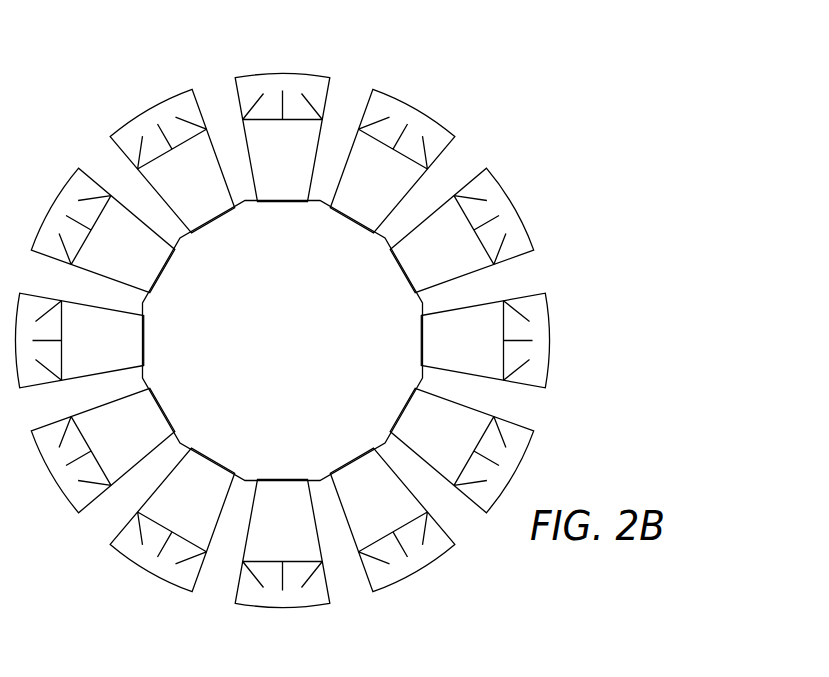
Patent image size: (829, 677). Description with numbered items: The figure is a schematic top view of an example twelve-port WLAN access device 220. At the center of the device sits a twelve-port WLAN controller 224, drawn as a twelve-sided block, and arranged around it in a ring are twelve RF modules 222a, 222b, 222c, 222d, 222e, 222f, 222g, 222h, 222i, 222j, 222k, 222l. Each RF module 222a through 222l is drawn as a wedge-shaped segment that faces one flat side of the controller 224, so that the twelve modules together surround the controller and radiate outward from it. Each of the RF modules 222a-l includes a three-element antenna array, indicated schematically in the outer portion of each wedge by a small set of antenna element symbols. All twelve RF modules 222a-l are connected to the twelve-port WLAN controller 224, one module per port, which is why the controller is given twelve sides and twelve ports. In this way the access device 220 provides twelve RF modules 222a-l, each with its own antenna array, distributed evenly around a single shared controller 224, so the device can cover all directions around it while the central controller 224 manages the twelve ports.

The 12-port WLAN access device 220 is at (358, 66).
The 12-port WLAN controller 224 is at (267, 341).
The RF module 222a is at (260, 164).
The RF module 222b is at (345, 189).
The RF module 222c is at (416, 257).
The RF module 222d is at (440, 352).
The RF module 222e is at (418, 444).
The RF module 222f is at (351, 509).
The RF module 222g is at (261, 537).
The RF module 222h is at (170, 509).
The RF module 222i is at (101, 444).
The RF module 222j is at (82, 346).
The RF module 222k is at (106, 257).
The RF module 222l is at (173, 192).